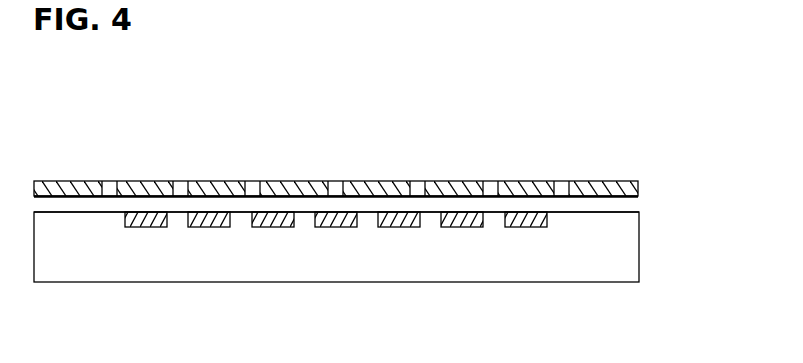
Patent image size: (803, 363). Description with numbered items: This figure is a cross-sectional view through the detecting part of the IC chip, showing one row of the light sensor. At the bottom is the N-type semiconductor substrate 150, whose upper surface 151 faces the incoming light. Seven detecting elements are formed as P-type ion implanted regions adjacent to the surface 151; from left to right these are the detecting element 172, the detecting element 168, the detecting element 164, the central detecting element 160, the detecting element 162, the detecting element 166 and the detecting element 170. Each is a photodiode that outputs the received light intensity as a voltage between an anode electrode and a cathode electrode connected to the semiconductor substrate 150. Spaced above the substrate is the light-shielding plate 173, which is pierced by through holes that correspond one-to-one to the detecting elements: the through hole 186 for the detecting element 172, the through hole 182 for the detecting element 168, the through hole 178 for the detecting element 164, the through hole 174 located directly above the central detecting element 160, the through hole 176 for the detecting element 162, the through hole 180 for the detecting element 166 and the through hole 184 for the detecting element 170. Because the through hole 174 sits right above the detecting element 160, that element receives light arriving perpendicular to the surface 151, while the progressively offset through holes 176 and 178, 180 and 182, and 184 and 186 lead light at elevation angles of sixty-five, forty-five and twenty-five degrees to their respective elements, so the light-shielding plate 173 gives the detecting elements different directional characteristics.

The semiconductor substrate 150 is at (628, 248).
The surface 151 is at (627, 203).
The light-shielding plate 173 is at (640, 185).
The detecting element 172 is at (146, 228).
The detecting element 168 is at (209, 228).
The detecting element 164 is at (273, 228).
The detecting element 160 is at (336, 228).
The detecting element 162 is at (399, 228).
The detecting element 166 is at (462, 228).
The detecting element 170 is at (526, 228).
The through hole 186 is at (104, 191).
The through hole 182 is at (176, 191).
The through hole 178 is at (248, 191).
The through hole 174 is at (330, 191).
The through hole 176 is at (412, 191).
The through hole 180 is at (486, 191).
The through hole 184 is at (556, 191).